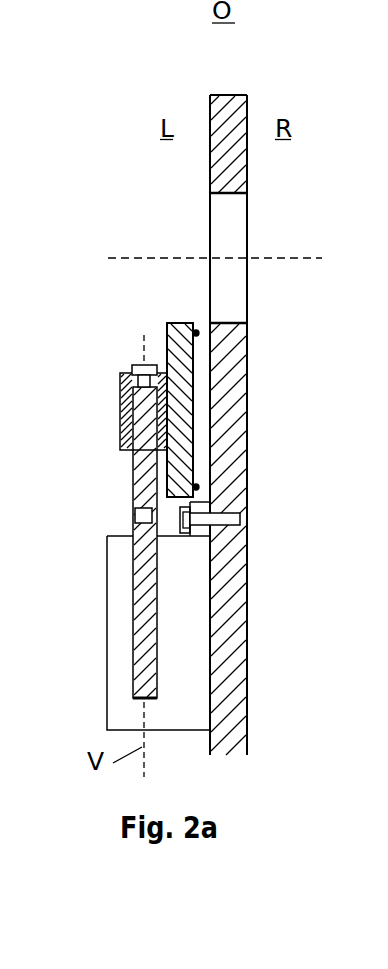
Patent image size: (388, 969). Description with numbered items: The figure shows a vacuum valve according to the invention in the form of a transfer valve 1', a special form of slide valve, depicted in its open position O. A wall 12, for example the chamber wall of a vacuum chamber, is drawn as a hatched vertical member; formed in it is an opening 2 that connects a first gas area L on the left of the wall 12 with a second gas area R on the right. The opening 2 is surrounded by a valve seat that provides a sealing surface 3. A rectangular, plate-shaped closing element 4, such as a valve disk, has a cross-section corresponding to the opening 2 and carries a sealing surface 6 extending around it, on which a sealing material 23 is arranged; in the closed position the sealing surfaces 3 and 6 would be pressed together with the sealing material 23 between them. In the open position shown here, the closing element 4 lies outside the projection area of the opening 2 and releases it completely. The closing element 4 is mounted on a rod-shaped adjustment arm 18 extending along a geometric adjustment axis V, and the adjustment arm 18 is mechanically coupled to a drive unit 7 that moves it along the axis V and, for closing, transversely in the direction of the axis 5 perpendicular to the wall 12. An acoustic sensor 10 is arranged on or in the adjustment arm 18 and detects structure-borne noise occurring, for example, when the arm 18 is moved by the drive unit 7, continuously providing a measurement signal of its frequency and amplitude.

The transfer valve 1' is at (144, 48).
The opening 2 is at (240, 207).
The wall 12 is at (230, 100).
The sealing surface 3 is at (200, 323).
The closing element 4 is at (145, 398).
The axis 5 is at (234, 239).
The sealing surface 6 is at (257, 410).
The sealing material 23 is at (255, 501).
The adjustment arm 18 is at (107, 531).
The acoustic sensor 10 is at (100, 505).
The drive unit 7 is at (117, 678).